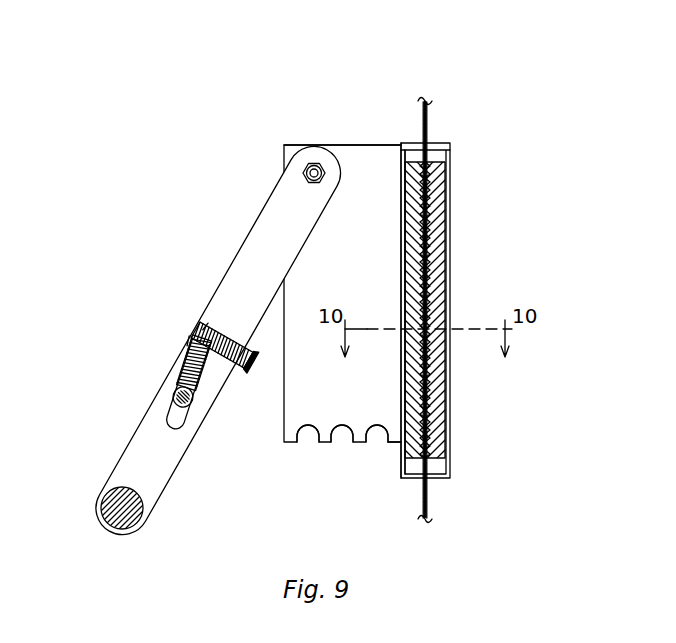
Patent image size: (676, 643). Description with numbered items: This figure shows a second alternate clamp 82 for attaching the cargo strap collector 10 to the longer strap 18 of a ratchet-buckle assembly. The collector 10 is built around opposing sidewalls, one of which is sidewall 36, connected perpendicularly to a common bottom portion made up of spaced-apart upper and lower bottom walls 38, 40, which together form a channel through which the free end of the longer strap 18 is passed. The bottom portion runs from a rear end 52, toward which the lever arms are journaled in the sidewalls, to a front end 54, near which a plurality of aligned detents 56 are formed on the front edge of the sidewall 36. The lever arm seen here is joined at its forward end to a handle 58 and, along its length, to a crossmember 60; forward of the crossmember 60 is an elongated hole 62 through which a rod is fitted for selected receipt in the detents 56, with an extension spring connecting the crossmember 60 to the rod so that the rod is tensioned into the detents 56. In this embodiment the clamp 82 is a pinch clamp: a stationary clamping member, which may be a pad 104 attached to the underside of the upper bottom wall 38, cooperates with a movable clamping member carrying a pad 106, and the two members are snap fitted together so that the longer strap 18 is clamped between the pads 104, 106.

The cargo strap collector 10 is at (353, 117).
The longer strap 18 is at (428, 128).
The sidewall 36 is at (284, 394).
The upper bottom wall 38 is at (401, 252).
The lower bottom wall 40 is at (450, 270).
The rear end 52 is at (383, 145).
The front end 54 is at (397, 444).
The detents 56 is at (306, 444).
The handle 58 is at (122, 525).
The crossmember 60 is at (198, 328).
The elongated holes 62 is at (170, 419).
The clamp 82 is at (458, 197).
The pad 104 is at (401, 195).
The pad 106 is at (440, 413).